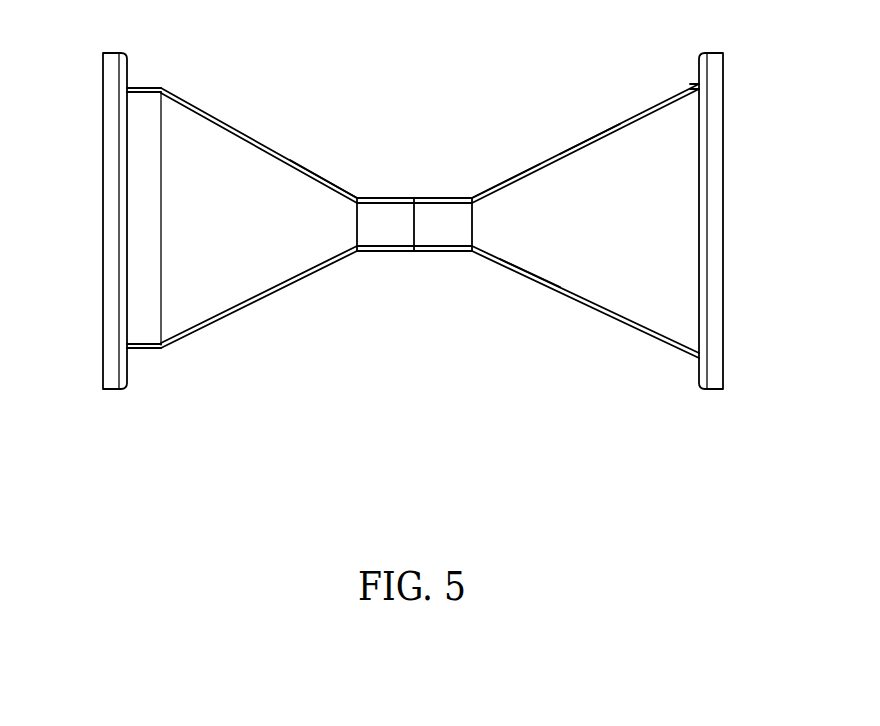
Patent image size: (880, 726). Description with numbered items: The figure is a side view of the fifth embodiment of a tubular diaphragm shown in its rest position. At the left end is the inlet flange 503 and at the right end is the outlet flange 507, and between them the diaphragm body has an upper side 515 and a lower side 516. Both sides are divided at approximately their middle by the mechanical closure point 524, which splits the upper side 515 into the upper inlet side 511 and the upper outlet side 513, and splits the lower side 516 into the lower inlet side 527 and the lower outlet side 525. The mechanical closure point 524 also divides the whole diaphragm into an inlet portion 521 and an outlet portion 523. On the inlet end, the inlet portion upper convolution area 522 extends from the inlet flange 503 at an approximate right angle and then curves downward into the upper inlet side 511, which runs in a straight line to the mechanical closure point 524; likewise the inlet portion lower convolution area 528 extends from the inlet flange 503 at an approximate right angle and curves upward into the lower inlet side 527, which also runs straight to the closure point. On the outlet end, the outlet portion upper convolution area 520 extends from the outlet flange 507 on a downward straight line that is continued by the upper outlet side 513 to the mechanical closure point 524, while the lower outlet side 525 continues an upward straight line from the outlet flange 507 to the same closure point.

The inlet flange 503 is at (110, 121).
The outlet flange 507 is at (714, 334).
The upper inlet side 511 is at (243, 133).
The upper outlet side 513 is at (637, 115).
The upper side 515 is at (590, 138).
The lower side 516 is at (538, 284).
The outlet portion upper convolution area 520 is at (697, 85).
The inlet portion 521 is at (319, 176).
The inlet portion upper convolution area 522 is at (162, 89).
The outlet portion 523 is at (534, 166).
The mechanical closure point 524 is at (414, 198).
The lower outlet side 525 is at (634, 330).
The lower inlet side 527 is at (265, 301).
The inlet portion lower convolution area 528 is at (163, 349).